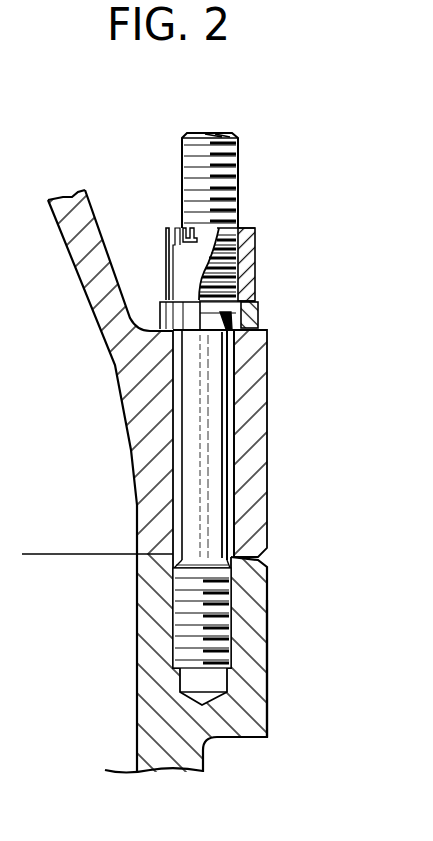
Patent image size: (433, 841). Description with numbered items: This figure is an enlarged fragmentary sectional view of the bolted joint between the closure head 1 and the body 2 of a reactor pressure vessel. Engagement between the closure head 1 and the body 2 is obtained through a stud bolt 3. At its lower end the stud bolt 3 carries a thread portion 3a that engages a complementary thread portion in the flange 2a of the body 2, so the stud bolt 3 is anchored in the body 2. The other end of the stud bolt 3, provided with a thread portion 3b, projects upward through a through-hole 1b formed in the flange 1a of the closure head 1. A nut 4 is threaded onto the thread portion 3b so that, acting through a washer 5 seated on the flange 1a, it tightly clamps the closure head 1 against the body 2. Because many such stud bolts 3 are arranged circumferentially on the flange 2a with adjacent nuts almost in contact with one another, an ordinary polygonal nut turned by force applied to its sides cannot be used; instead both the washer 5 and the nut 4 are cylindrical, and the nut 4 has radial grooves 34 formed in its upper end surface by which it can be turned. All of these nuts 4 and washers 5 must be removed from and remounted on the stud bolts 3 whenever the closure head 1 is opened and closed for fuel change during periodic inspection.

The closure head 1 is at (92, 288).
The flange of the closure head 1a is at (260, 442).
The through-hole 1b is at (245, 510).
The body 2 is at (137, 725).
The flange of the body 2a is at (267, 716).
The stud bolt 3 is at (242, 208).
The thread portion 3a is at (232, 612).
The thread portion 3b is at (238, 193).
The nut 4 is at (255, 262).
The washer 5 is at (258, 318).
The radial grooves 34 is at (193, 227).